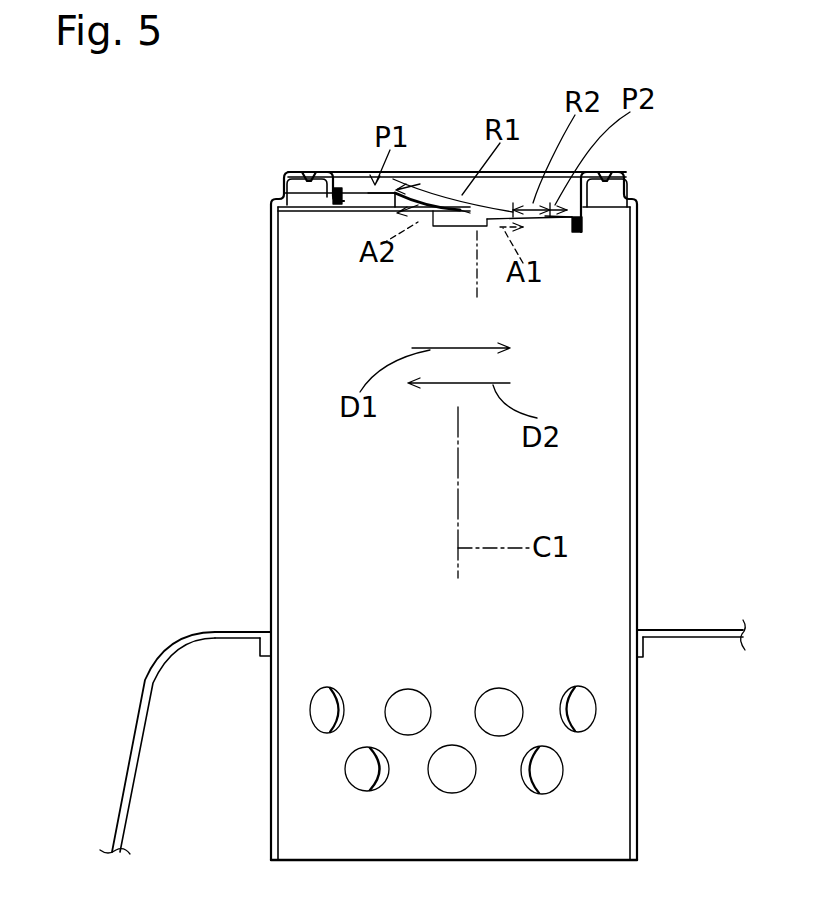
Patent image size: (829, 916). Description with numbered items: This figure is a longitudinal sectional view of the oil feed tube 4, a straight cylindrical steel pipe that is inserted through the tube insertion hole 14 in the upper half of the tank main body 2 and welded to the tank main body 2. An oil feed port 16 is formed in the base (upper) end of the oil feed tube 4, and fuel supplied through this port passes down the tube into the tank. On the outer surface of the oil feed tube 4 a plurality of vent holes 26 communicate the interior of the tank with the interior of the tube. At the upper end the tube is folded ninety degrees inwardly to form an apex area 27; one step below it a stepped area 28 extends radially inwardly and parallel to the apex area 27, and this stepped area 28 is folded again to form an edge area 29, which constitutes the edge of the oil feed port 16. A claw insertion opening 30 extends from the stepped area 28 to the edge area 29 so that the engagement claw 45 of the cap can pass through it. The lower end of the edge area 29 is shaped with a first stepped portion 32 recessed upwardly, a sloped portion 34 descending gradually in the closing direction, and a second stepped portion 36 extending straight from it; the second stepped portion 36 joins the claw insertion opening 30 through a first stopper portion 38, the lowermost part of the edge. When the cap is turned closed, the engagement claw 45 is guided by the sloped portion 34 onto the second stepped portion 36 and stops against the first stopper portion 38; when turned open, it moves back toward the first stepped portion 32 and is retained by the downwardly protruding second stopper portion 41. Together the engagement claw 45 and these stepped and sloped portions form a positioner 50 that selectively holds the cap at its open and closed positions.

The tank main body 2 is at (142, 670).
The oil feed tube 4 is at (645, 470).
The tube insertion hole 14 is at (278, 643).
The oil feed port 16 is at (399, 183).
The vent hole 26 is at (363, 763).
The apex area 27 is at (290, 173).
The stepped area 28 is at (334, 192).
The edge area 29 is at (340, 180).
The claw insertion opening 30 is at (497, 193).
The first stepped portion 32 is at (372, 195).
The sloped portion 34 is at (467, 215).
The second stepped portion 36 is at (552, 220).
The first stopper portion 38 is at (583, 233).
The second stopper portion 41 is at (330, 196).
The engagement claw 45 is at (460, 270).
The positioner 50 is at (316, 222).